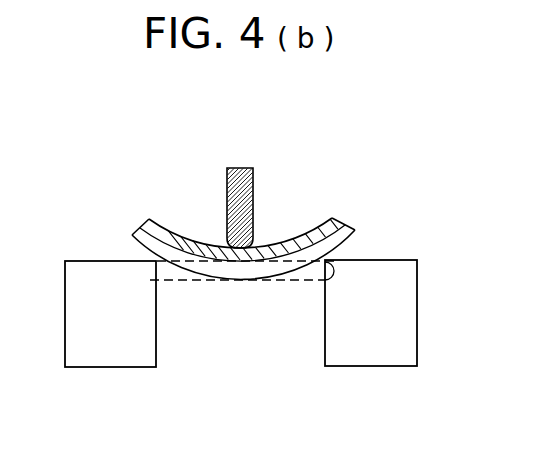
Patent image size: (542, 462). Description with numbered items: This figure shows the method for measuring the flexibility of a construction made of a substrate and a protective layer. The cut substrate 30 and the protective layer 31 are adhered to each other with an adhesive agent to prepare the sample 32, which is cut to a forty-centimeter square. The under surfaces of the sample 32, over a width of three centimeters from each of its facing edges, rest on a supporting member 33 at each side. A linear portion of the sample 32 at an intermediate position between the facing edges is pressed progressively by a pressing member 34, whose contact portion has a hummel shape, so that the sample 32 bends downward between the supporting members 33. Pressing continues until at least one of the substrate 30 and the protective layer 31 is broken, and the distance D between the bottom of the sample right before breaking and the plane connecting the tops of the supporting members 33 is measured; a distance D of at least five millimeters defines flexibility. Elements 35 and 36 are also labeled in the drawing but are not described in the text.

The substrate 30 is at (227, 220).
The protective layer 31 is at (147, 216).
The sample 32 is at (336, 221).
The supporting member 33 is at (106, 350).
The pressing member 34 is at (231, 181).
The initial position line 35 is at (182, 283).
The hardened surface layer 36 is at (290, 256).
The distance D is at (337, 270).